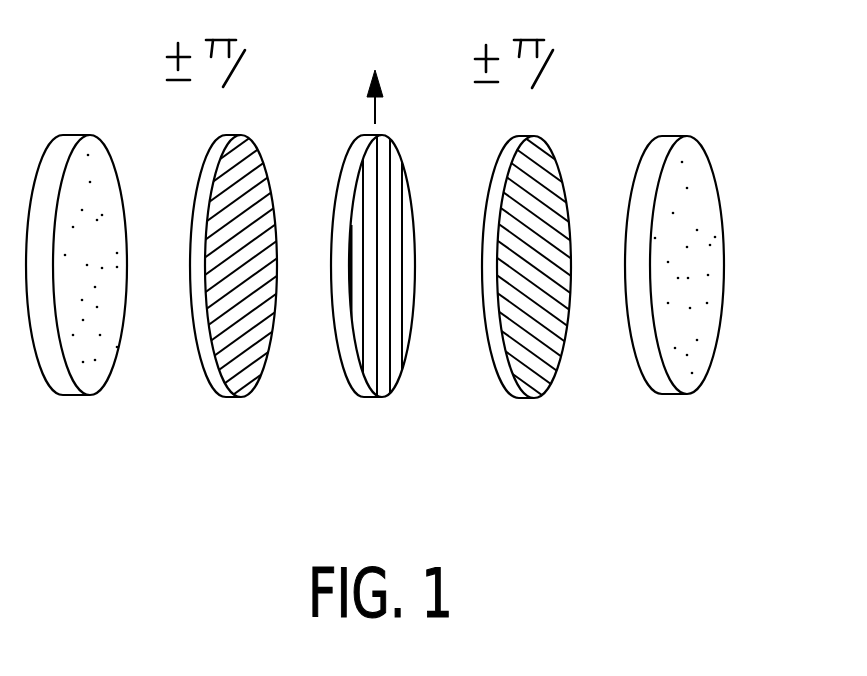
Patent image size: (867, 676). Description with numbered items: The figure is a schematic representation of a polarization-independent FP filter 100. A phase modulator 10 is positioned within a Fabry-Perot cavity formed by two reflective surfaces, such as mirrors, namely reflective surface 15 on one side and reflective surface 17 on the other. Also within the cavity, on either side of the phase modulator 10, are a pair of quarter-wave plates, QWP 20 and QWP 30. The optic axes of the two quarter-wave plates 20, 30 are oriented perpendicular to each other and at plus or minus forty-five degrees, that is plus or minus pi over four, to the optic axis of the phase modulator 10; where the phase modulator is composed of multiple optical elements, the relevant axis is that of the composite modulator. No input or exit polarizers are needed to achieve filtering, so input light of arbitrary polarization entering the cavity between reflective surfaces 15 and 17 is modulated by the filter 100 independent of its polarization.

The polarization-independent FP filter 100 is at (802, 58).
The reflective surface 15 is at (44, 384).
The quarter-wave plate 20 is at (215, 394).
The phase modulator 10 is at (380, 400).
The quarter-wave plate 30 is at (518, 399).
The reflective surface 17 is at (660, 396).